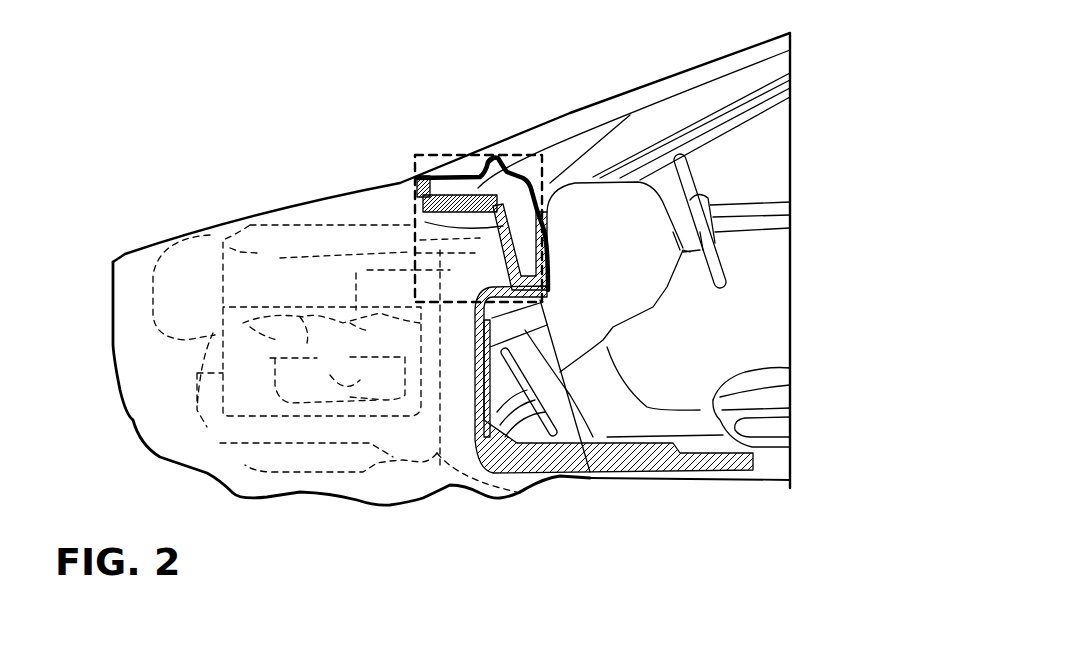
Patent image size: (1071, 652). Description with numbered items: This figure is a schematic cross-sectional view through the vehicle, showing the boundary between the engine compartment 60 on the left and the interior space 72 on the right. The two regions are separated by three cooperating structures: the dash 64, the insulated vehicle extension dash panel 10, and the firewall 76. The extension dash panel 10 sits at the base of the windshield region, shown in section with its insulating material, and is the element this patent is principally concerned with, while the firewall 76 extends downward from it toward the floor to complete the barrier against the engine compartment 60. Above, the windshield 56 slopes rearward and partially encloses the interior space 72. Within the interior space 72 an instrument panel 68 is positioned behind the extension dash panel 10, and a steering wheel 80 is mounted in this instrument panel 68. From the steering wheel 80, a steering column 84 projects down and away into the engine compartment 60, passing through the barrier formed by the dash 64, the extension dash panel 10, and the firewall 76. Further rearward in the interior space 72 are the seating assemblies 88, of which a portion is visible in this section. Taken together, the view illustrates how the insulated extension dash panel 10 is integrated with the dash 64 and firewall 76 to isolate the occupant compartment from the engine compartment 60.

The insulated vehicle extension dash panel 10 is at (417, 202).
The windshield 56 is at (597, 103).
The engine compartment 60 is at (290, 280).
The dash 64 is at (530, 172).
The instrument panel 68 is at (607, 222).
The interior space 72 is at (719, 164).
The firewall 76 is at (477, 400).
The steering wheel 80 is at (720, 273).
The steering column 84 is at (590, 472).
The seating assemblies 88 is at (790, 397).